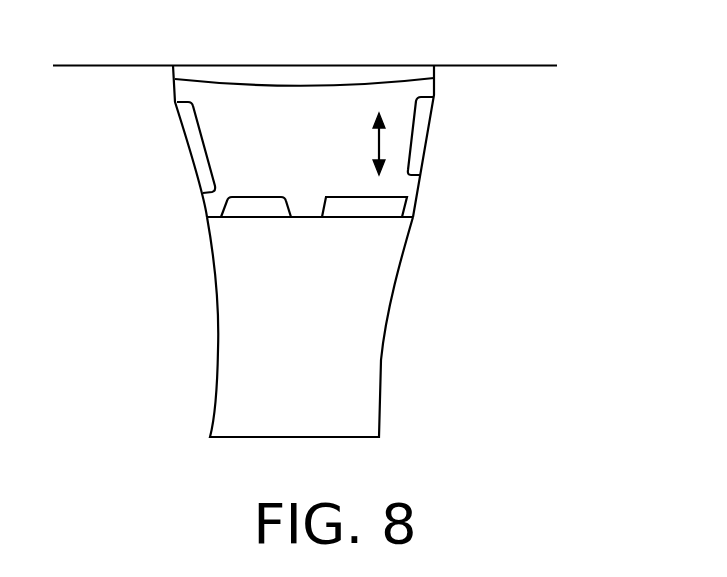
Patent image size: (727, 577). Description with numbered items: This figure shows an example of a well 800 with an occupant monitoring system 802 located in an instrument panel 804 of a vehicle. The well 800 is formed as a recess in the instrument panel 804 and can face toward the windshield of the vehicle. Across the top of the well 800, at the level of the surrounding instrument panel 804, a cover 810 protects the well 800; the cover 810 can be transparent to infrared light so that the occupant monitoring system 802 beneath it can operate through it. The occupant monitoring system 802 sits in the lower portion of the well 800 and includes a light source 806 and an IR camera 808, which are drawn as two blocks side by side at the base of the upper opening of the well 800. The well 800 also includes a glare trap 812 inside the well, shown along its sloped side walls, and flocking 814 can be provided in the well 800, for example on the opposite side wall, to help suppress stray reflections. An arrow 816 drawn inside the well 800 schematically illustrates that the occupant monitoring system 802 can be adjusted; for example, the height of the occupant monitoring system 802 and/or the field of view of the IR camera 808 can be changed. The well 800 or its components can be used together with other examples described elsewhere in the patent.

The well 800 is at (258, 136).
The occupant monitoring system 802 is at (323, 342).
The instrument panel 804 is at (529, 210).
The light source 806 is at (346, 242).
The IR camera 808 is at (238, 242).
The cover 810 is at (321, 52).
The glare trap 812 is at (179, 160).
The flocking 814 is at (480, 140).
The arrow 816 is at (324, 152).